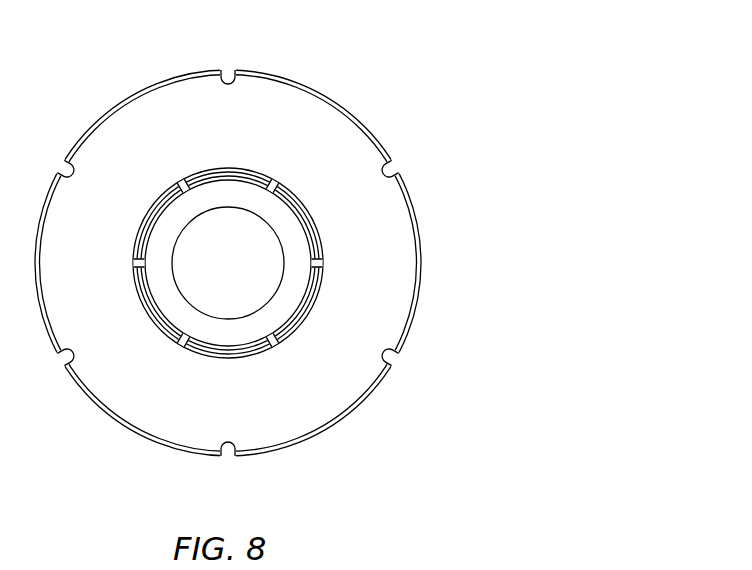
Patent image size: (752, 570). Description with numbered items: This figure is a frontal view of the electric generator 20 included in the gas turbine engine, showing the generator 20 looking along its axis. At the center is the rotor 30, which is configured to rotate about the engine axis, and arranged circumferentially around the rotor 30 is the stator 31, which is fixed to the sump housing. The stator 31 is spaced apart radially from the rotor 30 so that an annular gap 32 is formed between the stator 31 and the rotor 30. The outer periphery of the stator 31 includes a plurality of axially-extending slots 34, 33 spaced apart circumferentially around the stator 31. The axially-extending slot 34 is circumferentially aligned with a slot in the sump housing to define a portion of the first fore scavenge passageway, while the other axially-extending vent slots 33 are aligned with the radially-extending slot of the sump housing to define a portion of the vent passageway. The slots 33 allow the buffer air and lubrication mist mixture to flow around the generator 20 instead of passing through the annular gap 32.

The electric generator 20 is at (343, 273).
The rotor 30 is at (314, 305).
The stator 31 is at (427, 211).
The annular gap 32 is at (338, 258).
The axially-extending vent slots 33 is at (407, 155).
The axially-extending slot 34 is at (241, 465).